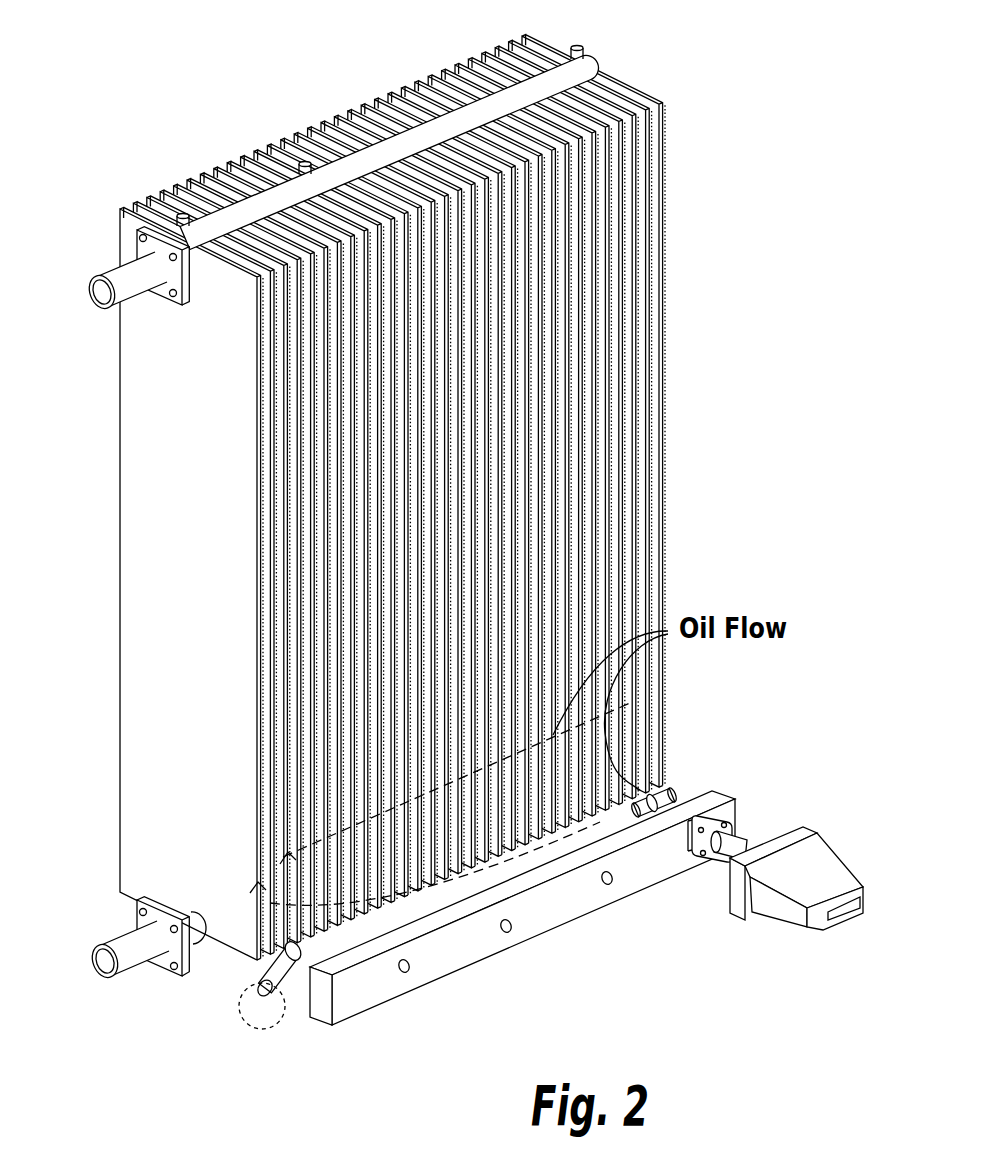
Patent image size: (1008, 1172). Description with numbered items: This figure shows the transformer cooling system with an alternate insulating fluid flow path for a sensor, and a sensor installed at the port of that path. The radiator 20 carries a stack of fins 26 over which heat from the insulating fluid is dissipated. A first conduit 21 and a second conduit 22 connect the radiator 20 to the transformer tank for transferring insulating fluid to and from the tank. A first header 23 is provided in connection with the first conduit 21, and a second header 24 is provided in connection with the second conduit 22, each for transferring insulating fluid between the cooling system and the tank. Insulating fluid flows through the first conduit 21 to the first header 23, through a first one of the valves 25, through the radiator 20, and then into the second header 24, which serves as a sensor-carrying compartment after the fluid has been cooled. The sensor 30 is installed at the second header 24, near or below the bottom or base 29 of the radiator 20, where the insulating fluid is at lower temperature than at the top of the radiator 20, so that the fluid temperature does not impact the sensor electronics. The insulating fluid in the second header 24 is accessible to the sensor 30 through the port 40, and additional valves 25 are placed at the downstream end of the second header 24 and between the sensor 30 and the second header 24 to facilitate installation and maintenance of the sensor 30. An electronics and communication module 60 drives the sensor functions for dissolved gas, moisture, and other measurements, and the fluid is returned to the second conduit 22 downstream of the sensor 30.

The radiator 20 is at (394, 535).
The first conduit 21 is at (110, 275).
The second conduit 22 is at (116, 948).
The first header 23 is at (347, 175).
The second header 24 is at (486, 942).
The valve 25 is at (662, 800).
The fins 26 is at (343, 537).
The base 29 is at (233, 956).
The sensor 30 is at (796, 898).
The port 40 is at (718, 812).
The electronics and communication module 60 is at (843, 925).